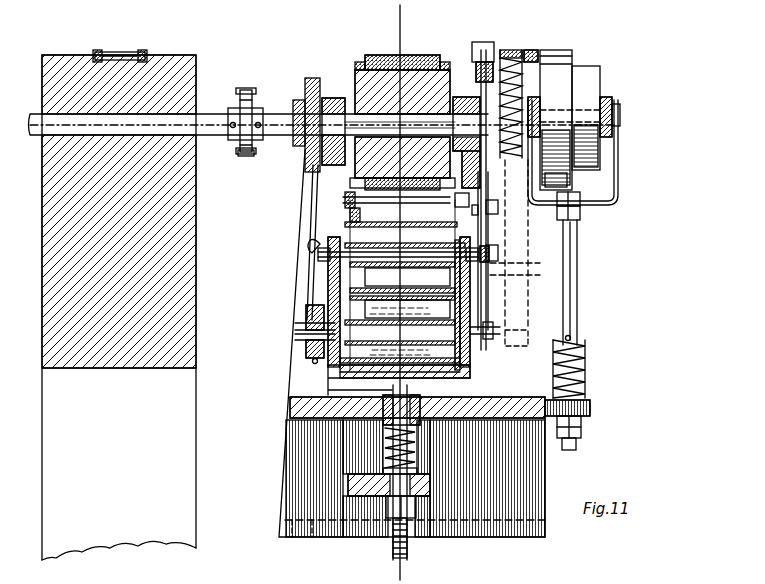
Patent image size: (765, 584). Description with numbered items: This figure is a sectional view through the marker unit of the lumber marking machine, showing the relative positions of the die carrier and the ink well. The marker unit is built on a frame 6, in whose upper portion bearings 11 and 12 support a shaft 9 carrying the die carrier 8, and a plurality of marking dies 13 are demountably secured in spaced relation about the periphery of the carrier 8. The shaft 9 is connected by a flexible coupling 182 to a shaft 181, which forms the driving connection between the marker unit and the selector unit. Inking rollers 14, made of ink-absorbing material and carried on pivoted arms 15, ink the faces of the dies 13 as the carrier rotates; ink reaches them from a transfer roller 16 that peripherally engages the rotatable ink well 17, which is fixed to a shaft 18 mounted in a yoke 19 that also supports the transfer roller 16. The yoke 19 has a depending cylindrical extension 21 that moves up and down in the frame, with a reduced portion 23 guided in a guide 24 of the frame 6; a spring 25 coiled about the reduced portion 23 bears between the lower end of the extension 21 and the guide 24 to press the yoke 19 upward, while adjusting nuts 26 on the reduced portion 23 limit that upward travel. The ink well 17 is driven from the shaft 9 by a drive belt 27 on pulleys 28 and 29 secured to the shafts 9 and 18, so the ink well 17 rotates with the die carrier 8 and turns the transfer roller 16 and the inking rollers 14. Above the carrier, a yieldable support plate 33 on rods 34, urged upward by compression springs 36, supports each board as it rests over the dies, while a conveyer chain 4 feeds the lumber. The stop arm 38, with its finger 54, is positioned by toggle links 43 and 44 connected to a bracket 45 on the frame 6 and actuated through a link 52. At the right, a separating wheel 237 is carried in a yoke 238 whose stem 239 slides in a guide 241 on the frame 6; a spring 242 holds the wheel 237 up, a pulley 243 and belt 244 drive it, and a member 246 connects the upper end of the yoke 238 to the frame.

The conveyer chain 4 is at (124, 52).
The frame 6 is at (290, 460).
The die carrier 8 is at (356, 72).
The shaft 9 is at (284, 110).
The bearing 11 is at (333, 98).
The bearing 12 is at (466, 97).
The marking die 13 is at (424, 55).
The inking roller 14 is at (355, 211).
The pivoted arm 15 is at (343, 196).
The transfer roller 16 is at (345, 290).
The ink well 17 is at (318, 383).
The shaft 18 is at (306, 342).
The yoke 19 is at (472, 378).
The cylindrical extension 21 is at (393, 418).
The reduced portion 23 is at (383, 470).
The guide 24 is at (375, 496).
The spring 25 is at (385, 454).
The adjusting nuts 26 is at (388, 520).
The drive belt 27 is at (310, 228).
The pulley 28 is at (312, 78).
The pulley 29 is at (306, 315).
The plate 33 is at (516, 50).
The rod 34 is at (530, 60).
The compression spring 36 is at (522, 88).
The arm 38 is at (484, 62).
The toggle link 43 is at (478, 80).
The toggle link 44 is at (490, 238).
The bracket 45 is at (490, 340).
The link 52 is at (490, 262).
The finger 54 is at (484, 42).
The shaft 181 is at (236, 106).
The flexible coupling 182 is at (246, 156).
The separating wheel 237 is at (540, 62).
The yoke 238 is at (618, 172).
The stem 239 is at (580, 304).
The guide 241 is at (588, 410).
The spring 242 is at (590, 378).
The pulley 243 is at (606, 97).
The belt 244 is at (592, 66).
The member 246 is at (616, 104).